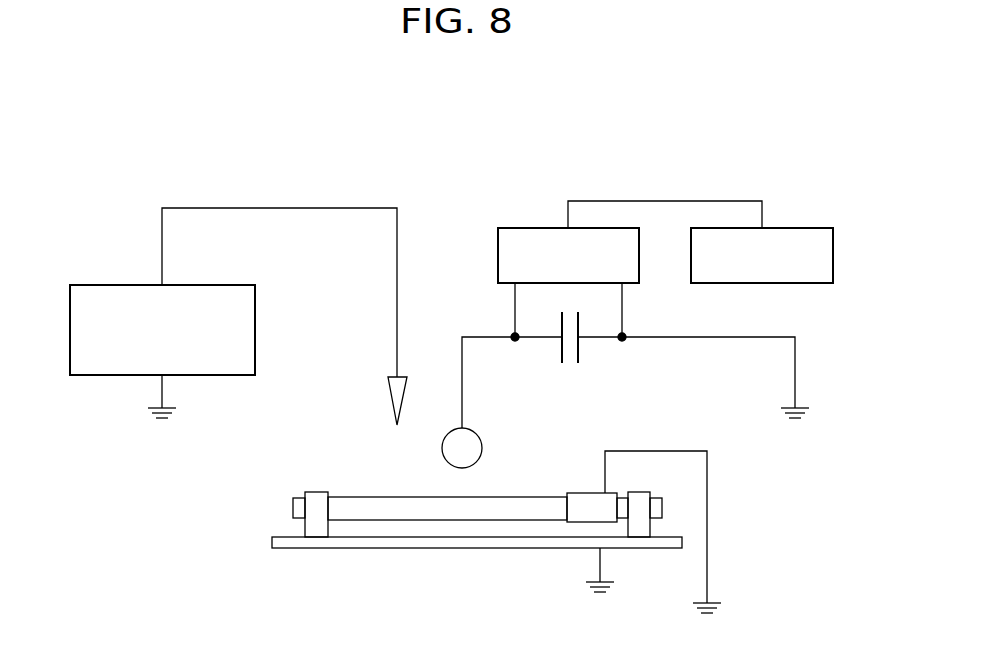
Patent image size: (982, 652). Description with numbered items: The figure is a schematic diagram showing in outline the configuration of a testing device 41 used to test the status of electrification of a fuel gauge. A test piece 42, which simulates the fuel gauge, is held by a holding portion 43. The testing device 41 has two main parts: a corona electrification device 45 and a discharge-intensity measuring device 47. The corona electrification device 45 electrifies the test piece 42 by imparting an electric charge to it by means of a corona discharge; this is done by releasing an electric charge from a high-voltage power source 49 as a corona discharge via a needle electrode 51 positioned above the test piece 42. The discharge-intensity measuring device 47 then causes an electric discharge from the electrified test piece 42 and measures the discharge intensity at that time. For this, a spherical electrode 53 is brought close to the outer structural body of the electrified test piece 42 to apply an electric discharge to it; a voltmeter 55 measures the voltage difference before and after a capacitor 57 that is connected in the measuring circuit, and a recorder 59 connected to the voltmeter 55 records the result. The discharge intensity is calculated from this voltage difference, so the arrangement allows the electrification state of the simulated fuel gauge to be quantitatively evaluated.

The testing device 41 is at (557, 128).
The test piece 42 is at (457, 520).
The holding portion 43 is at (270, 478).
The corona electrification device 45 is at (258, 180).
The discharge-intensity measuring device 47 is at (692, 178).
The high-voltage power source 49 is at (109, 285).
The needle electrode 51 is at (388, 400).
The spherical electrode 53 is at (483, 450).
The voltmeter 55 is at (527, 228).
The capacitor 57 is at (566, 363).
The recorder 59 is at (807, 228).